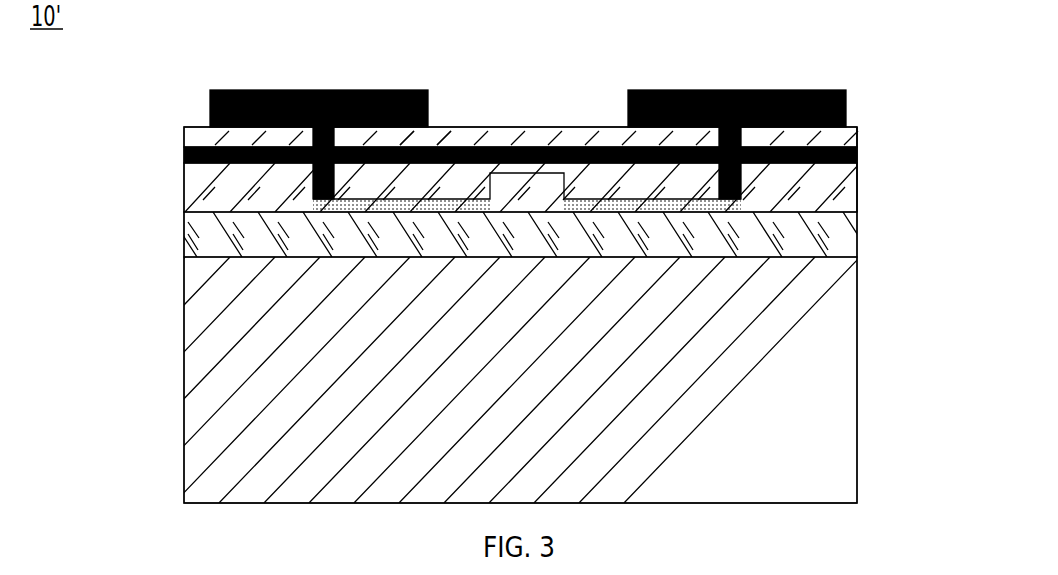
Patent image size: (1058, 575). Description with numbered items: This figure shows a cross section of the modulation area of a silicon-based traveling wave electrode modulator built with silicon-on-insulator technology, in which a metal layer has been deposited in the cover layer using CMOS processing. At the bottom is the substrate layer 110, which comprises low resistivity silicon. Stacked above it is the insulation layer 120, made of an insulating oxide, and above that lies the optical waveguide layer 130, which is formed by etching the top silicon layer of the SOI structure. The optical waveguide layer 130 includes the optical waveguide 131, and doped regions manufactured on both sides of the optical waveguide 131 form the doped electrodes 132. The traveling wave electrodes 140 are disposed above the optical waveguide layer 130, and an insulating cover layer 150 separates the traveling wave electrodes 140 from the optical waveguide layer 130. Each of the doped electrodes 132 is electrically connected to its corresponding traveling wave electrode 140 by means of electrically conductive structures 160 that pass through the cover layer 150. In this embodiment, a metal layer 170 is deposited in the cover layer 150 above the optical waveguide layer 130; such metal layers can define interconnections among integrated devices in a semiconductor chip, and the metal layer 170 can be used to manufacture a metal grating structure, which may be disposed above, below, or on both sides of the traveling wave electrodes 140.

The substrate layer 110 is at (810, 430).
The insulation layer 120 is at (840, 240).
The optical waveguide layer 130 is at (747, 205).
The optical waveguide 131 is at (548, 147).
The doped electrodes 132 is at (440, 147).
The traveling wave electrodes 140 is at (280, 88).
The insulating cover layer 150 is at (185, 137).
The electrically conductive structures 160 is at (313, 180).
The metal layer 170 is at (857, 150).